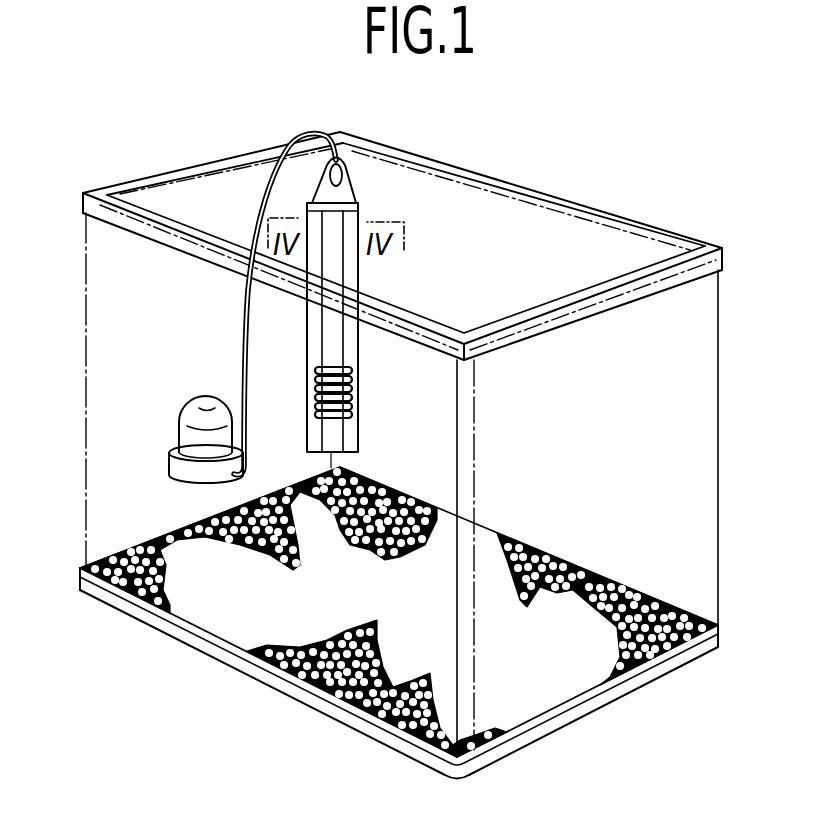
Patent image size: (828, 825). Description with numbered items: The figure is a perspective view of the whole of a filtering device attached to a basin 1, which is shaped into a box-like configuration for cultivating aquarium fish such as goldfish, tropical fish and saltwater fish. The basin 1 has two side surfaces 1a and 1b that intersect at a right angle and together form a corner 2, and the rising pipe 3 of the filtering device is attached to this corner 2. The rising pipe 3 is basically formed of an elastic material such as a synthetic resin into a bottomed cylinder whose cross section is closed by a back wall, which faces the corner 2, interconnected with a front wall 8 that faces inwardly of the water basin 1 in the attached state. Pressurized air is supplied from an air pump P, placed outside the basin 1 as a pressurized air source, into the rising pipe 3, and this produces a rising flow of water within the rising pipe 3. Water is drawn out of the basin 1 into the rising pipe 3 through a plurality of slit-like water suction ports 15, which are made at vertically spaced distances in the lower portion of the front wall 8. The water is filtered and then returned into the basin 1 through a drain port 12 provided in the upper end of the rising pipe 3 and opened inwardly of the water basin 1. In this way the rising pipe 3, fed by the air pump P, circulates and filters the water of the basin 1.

The basin 1 is at (594, 203).
The side surface 1a is at (454, 190).
The side surface 1b is at (202, 188).
The corner 2 is at (349, 141).
The rising pipe 3 is at (364, 357).
The front wall 8 is at (330, 340).
The drain port 12 is at (344, 177).
The slit-like water suction ports 15 is at (349, 415).
The air pump P is at (190, 433).